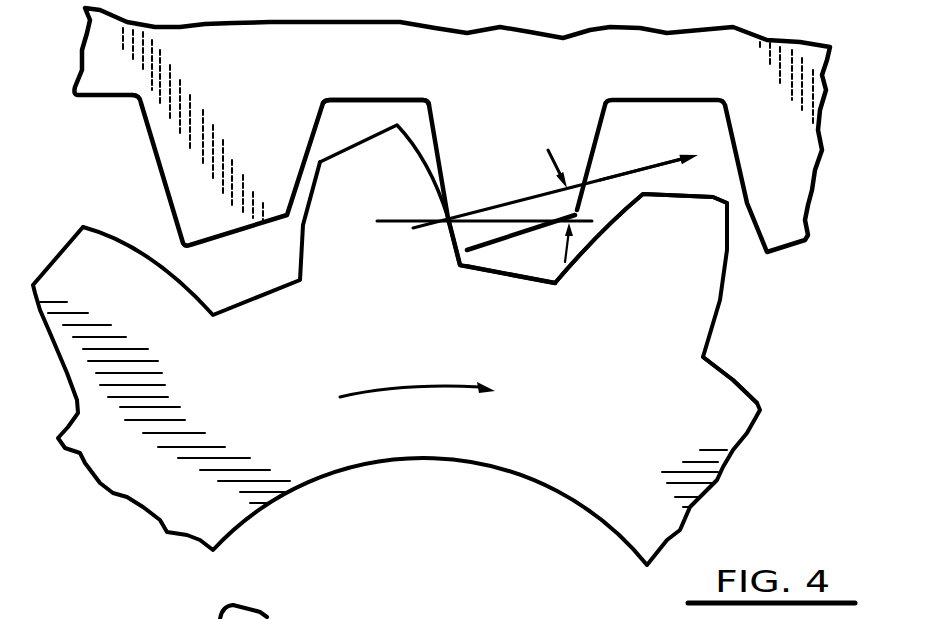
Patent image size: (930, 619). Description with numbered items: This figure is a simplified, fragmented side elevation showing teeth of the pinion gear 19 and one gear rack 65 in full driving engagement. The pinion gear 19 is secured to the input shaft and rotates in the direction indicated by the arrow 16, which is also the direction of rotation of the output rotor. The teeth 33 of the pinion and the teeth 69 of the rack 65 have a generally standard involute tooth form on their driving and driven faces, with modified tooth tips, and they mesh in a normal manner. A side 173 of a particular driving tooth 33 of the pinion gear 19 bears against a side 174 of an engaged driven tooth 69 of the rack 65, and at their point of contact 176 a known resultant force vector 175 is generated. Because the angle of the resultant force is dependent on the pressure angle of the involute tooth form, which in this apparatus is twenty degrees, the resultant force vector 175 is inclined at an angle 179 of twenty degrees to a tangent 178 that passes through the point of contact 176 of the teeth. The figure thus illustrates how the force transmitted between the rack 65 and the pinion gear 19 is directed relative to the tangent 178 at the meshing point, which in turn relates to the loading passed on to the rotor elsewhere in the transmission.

The arrow 16 is at (405, 384).
The pinion gear 19 is at (703, 392).
The teeth of the pinion 33 is at (153, 298).
The toothed gear rack 65 is at (125, 84).
The teeth of the rack 69 is at (577, 133).
The side of driving tooth 173 is at (415, 143).
The side of driven tooth 174 is at (430, 113).
The resultant force vector 175 is at (625, 172).
The point of contact 176 is at (453, 212).
The tangent 178 is at (400, 219).
The angle 179 is at (565, 260).